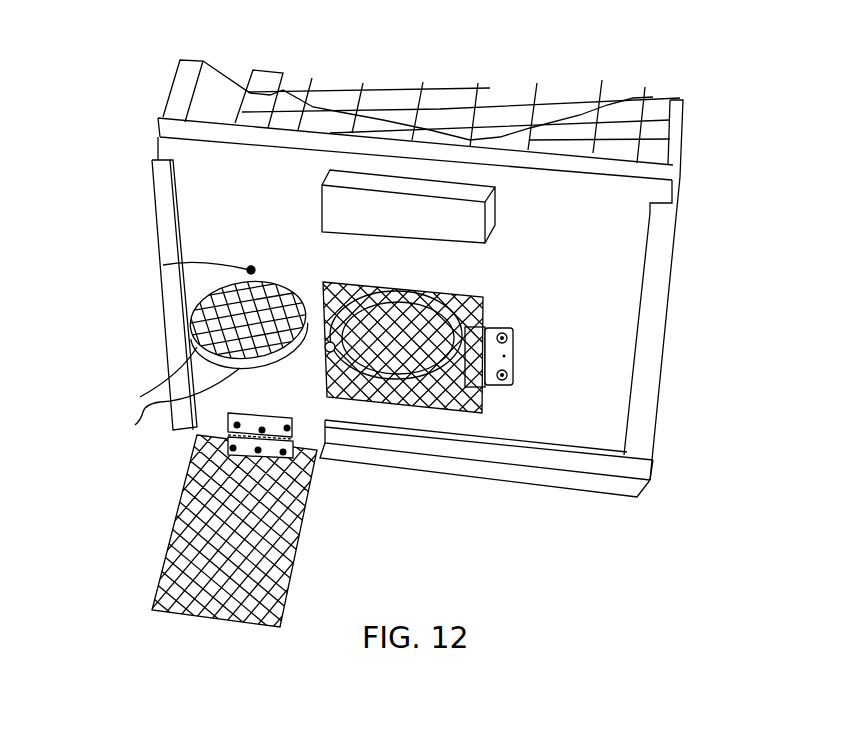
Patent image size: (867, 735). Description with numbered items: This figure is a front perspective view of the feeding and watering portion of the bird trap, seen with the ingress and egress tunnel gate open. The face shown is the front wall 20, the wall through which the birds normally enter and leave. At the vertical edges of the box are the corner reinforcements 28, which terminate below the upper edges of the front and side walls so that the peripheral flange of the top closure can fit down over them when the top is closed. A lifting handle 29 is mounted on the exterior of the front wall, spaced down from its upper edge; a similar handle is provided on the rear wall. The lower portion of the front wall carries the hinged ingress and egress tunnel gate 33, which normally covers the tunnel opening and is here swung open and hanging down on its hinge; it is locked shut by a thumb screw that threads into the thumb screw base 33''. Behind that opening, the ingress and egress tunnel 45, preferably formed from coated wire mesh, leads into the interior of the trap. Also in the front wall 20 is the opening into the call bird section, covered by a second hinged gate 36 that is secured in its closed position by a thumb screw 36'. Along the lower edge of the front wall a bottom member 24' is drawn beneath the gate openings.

The front wall 20 is at (585, 478).
The bottom board 24' is at (485, 505).
The corner reinforcements 28 is at (157, 185).
The lifting handles 29 is at (410, 207).
The hinged ingress and egress tunnel gate 33 is at (234, 531).
The thumb screw base 33'' is at (175, 287).
The hinged gate 36 is at (403, 354).
The thumb screw 36' is at (393, 407).
The ingress and egress tunnel 45 is at (135, 425).